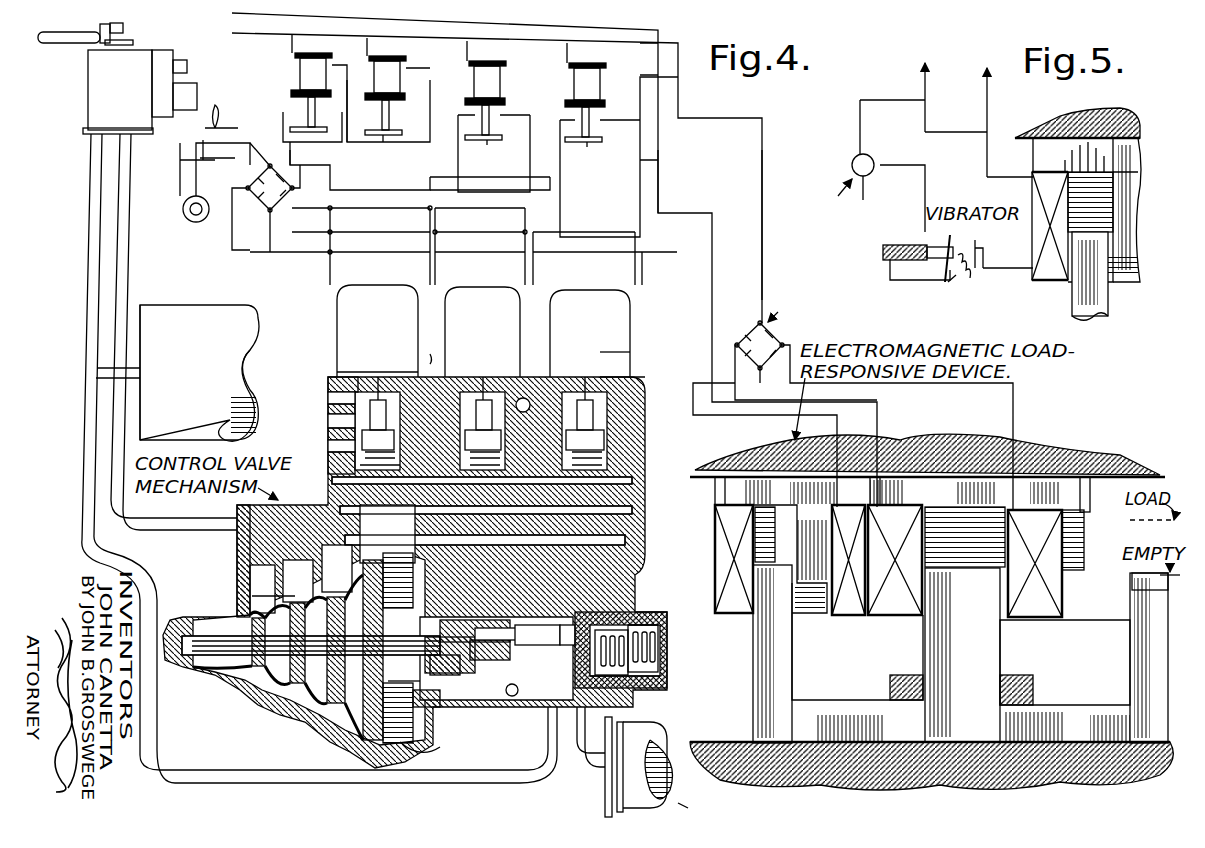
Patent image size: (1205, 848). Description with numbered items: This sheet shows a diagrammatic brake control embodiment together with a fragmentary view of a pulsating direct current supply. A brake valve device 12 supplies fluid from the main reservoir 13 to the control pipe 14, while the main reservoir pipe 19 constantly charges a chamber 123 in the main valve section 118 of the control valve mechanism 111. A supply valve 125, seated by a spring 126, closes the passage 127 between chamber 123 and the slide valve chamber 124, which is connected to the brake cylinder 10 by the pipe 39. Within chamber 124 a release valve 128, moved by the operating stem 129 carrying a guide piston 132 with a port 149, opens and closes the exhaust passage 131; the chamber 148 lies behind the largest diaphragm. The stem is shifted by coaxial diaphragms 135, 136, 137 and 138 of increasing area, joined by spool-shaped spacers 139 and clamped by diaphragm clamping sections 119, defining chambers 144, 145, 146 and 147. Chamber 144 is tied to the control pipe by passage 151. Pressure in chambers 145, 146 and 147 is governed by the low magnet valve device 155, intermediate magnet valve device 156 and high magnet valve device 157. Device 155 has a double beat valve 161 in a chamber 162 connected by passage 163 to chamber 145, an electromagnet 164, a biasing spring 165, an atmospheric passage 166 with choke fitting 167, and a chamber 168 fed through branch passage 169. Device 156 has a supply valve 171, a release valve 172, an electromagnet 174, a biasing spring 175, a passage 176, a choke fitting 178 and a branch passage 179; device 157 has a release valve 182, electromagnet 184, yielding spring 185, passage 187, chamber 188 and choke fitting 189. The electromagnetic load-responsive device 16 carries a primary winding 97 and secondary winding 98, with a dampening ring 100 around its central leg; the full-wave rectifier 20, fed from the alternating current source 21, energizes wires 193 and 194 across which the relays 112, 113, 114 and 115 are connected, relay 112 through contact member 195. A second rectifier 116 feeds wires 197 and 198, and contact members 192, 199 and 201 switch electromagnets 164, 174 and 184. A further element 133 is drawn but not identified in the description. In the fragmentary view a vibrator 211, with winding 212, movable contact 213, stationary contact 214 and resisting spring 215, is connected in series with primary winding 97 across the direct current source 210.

In FIG. 4, the brake cylinder 10 is at (603, 799).
In FIG. 4, the brake valve device 12 is at (85, 118).
In FIG. 4, the main reservoir 13 is at (181, 312).
In FIG. 4, the control pipe 14 is at (128, 298).
In FIG. 4, the electromagnetic load-responsive device 16 is at (960, 440).
In FIG. 5, the electromagnetic load-responsive device 16 is at (1046, 122).
In FIG. 4, the main reservoir pipe 19 is at (200, 777).
In FIG. 4, the full-wave rectifier 20 is at (750, 328).
In FIG. 4, the source of alternating current supply 21 is at (182, 211).
In FIG. 4, the pipe 39 is at (550, 743).
In FIG. 4, the primary winding 97 is at (735, 608).
In FIG. 5, the primary winding 97 is at (1044, 275).
In FIG. 4, the secondary winding 98 is at (897, 610).
In FIG. 4, the dampening ring 100 is at (1016, 680).
In FIG. 4, the control valve mechanism 111 is at (300, 403).
In FIG. 4, the control relay 112 is at (332, 57).
In FIG. 4, the control relay 113 is at (402, 57).
In FIG. 4, the control relay 114 is at (508, 60).
In FIG. 4, the control relay 115 is at (608, 62).
In FIG. 4, the rectifier 116 is at (266, 214).
In FIG. 4, the main valve section 118 is at (645, 572).
In FIG. 4, the diaphragm clamping sections 119 is at (360, 730).
In FIG. 4, the chamber 123 is at (615, 613).
In FIG. 4, the slide valve chamber 124 is at (536, 708).
In FIG. 4, the supply valve 125 is at (658, 673).
In FIG. 4, the spring 126 is at (658, 640).
In FIG. 4, the port or passage 127 is at (572, 626).
In FIG. 4, the release valve 128 is at (491, 708).
In FIG. 4, the operating stem 129 is at (472, 635).
In FIG. 4, the exhaust port or passage 131 is at (478, 672).
In FIG. 4, the guide piston 132 is at (449, 708).
In FIG. 4, the chamber 133 is at (517, 630).
In FIG. 4, the diaphragm 135 is at (240, 673).
In FIG. 4, the diaphragm 136 is at (292, 701).
In FIG. 4, the diaphragm 137 is at (335, 731).
In FIG. 4, the diaphragm 138 is at (400, 771).
In FIG. 4, the spool-shaped spacers 139 is at (330, 677).
In FIG. 4, the chamber 144 is at (256, 600).
In FIG. 4, the chamber 145 is at (256, 618).
In FIG. 4, the chamber 146 is at (310, 633).
In FIG. 4, the chamber 147 is at (349, 637).
In FIG. 4, the chamber 148 is at (412, 746).
In FIG. 4, the port 149 is at (434, 640).
In FIG. 4, the passage 151 is at (250, 571).
In FIG. 4, the low magnet valve device 155 is at (392, 268).
In FIG. 4, the intermediate magnet valve device 156 is at (497, 268).
In FIG. 4, the high magnet valve device 157 is at (602, 270).
In FIG. 4, the double beat valve 161 is at (328, 410).
In FIG. 4, the chamber 162 is at (341, 430).
In FIG. 4, the passage 163 is at (326, 512).
In FIG. 4, the electromagnet 164 is at (337, 362).
In FIG. 4, the biasing spring 165 is at (328, 452).
In FIG. 4, the atmospheric passage 166 is at (328, 378).
In FIG. 4, the choke fitting 167 is at (328, 392).
In FIG. 4, the chamber 168 is at (328, 430).
In FIG. 4, the branch passage 169 is at (390, 479).
In FIG. 4, the supply valve 171 is at (514, 408).
In FIG. 4, the release valve 172 is at (381, 431).
In FIG. 4, the electromagnet 174 is at (435, 350).
In FIG. 4, the biasing spring 175 is at (466, 479).
In FIG. 4, the passage 176 is at (485, 533).
In FIG. 4, the choke fitting 178 is at (501, 402).
In FIG. 4, the branch passage 179 is at (486, 468).
In FIG. 4, the release valve 182 is at (633, 362).
In FIG. 4, the electromagnet 184 is at (612, 350).
In FIG. 4, the yielding spring 185 is at (569, 468).
In FIG. 4, the passage 187 is at (632, 492).
In FIG. 4, the chamber 188 is at (543, 407).
In FIG. 4, the choke fitting 189 is at (628, 413).
In FIG. 4, the contact member 192 is at (309, 132).
In FIG. 4, the wire 193 is at (658, 162).
In FIG. 4, the wire 194 is at (762, 176).
In FIG. 4, the contact member 195 is at (381, 140).
In FIG. 4, the wire 197 is at (460, 193).
In FIG. 4, the wire 198 is at (461, 217).
In FIG. 4, the contact member 199 is at (485, 142).
In FIG. 4, the contact member 201 is at (591, 145).
In FIG. 5, the direct current source of supply 210 is at (880, 172).
In FIG. 5, the vibrator 211 is at (880, 252).
In FIG. 5, the electromagnet winding 212 is at (902, 242).
In FIG. 5, the movable contact member 213 is at (939, 253).
In FIG. 5, the stationary contact member 214 is at (975, 242).
In FIG. 5, the resisting spring 215 is at (963, 281).